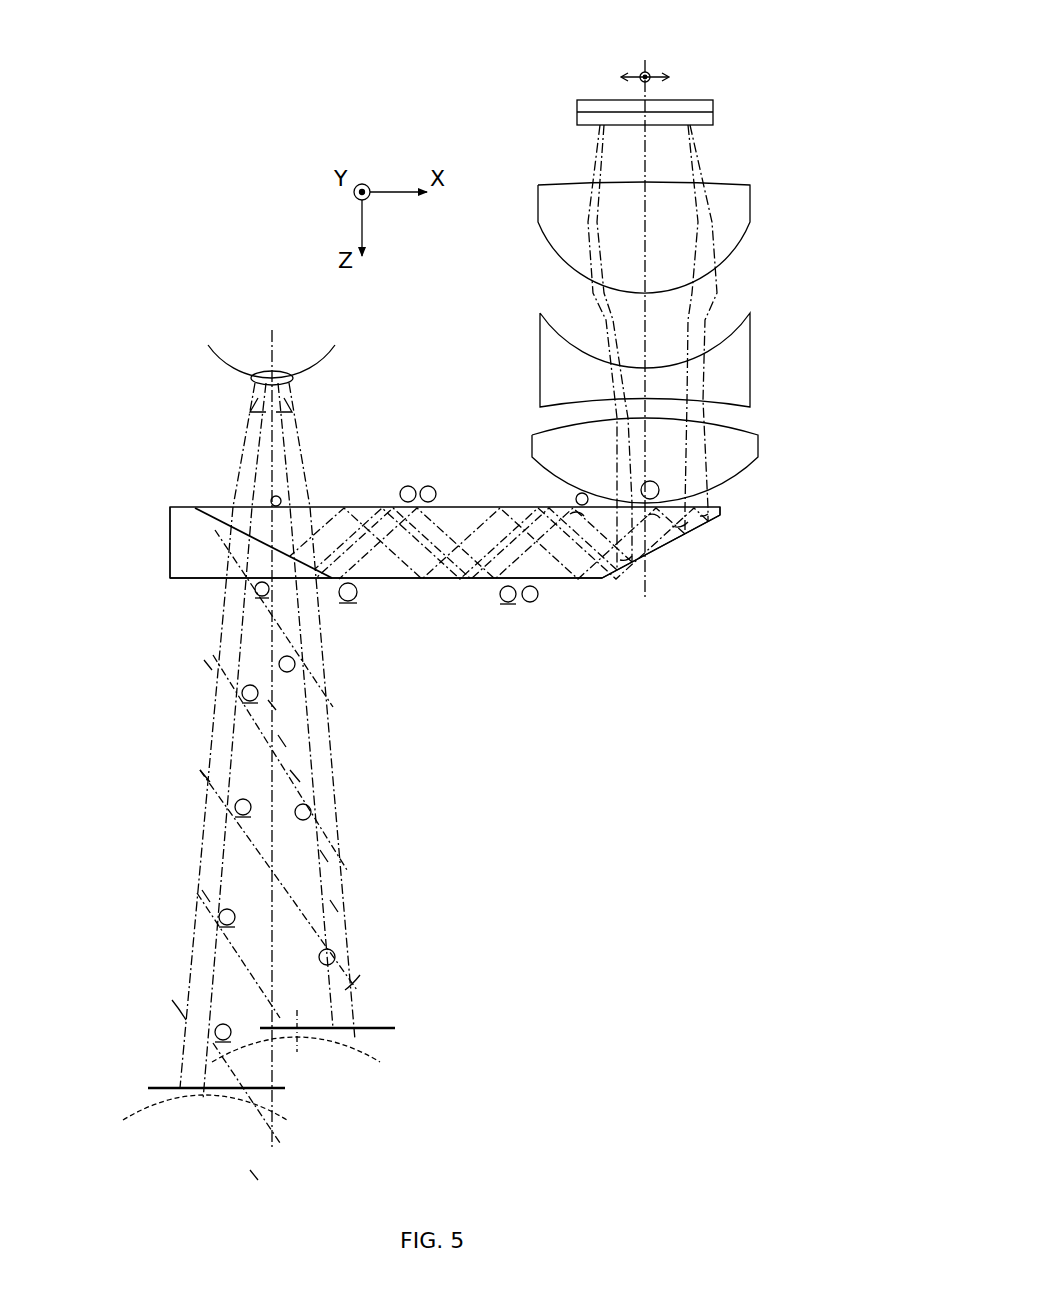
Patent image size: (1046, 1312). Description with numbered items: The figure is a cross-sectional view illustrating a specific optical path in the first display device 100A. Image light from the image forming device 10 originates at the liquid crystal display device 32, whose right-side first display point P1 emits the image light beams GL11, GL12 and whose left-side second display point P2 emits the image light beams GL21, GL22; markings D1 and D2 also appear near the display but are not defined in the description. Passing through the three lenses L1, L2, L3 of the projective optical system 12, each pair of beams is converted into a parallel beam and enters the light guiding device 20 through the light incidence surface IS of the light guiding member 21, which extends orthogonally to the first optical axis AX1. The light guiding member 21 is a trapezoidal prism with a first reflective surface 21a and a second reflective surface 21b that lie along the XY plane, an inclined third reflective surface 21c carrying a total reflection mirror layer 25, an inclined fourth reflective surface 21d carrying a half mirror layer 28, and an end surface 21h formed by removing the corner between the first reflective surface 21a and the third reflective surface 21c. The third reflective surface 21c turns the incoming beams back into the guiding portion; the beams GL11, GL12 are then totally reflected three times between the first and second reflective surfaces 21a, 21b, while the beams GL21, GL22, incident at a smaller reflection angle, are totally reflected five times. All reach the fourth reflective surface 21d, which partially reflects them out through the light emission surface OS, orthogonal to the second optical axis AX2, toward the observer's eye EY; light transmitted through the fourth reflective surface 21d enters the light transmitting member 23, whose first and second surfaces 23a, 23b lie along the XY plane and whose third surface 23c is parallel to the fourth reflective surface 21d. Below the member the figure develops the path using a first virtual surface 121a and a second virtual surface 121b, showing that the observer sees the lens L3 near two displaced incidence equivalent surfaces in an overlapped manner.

The first display device 100A is at (252, 76).
The image forming device 10 is at (540, 96).
The liquid crystal display device 32 is at (577, 112).
The projective optical system 12 is at (527, 269).
The light guiding device 20 is at (518, 707).
The light guiding member 21 is at (560, 590).
The first reflective surface 21a is at (545, 500).
The second reflective surface 21b is at (430, 582).
The third reflective surface 21c is at (660, 560).
The fourth reflective surface 21d is at (200, 548).
The end surface 21h is at (722, 510).
The light transmitting member 23 is at (228, 560).
The first surface 23a is at (172, 508).
The second surface 23b is at (215, 578).
The third surface 23c is at (338, 530).
The mirror layer 25 is at (700, 520).
The half mirror layer 28 is at (215, 525).
The first virtual surface 121a is at (320, 683).
The second virtual surface 121b is at (342, 828).
The lens L1 is at (560, 208).
The lens L2 is at (560, 352).
The lens L3 is at (538, 440).
The first optical axis AX1 is at (645, 312).
The second optical axis AX2 is at (272, 727).
The observer's eye EY is at (215, 368).
The light emission surface OS is at (248, 505).
The light incidence surface IS is at (700, 507).
The first direction D1 is at (640, 72).
The second direction D2 is at (652, 72).
The first display point P1 is at (690, 102).
The second display point P2 is at (602, 102).
The image light beam GL11 is at (698, 176).
The image light beam GL12 is at (704, 150).
The image light beam GL21 is at (600, 175).
The image light beam GL22 is at (596, 150).